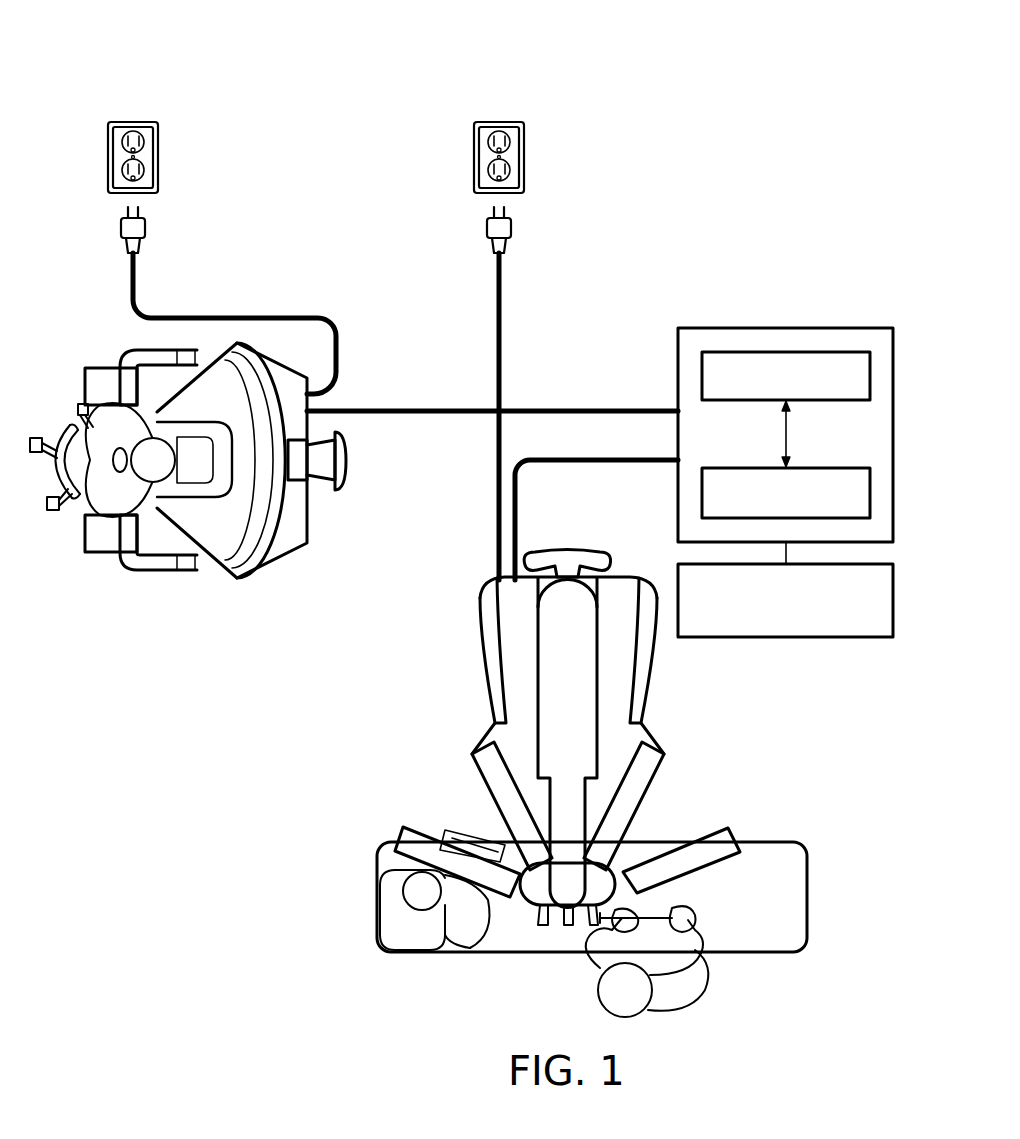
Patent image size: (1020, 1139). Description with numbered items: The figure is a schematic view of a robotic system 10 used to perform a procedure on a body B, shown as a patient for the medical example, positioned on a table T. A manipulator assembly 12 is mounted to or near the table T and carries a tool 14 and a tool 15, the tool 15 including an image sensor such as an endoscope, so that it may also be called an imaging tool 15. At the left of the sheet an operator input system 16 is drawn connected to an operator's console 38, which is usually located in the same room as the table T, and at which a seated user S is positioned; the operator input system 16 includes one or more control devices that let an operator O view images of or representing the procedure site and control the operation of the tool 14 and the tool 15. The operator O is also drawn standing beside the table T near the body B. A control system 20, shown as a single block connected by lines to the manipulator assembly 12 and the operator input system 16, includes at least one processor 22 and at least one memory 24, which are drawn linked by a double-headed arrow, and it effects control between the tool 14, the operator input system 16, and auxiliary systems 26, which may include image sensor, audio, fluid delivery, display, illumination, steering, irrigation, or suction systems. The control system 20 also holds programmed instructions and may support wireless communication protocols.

The robotic system 10 is at (310, 64).
The manipulator assembly 12 is at (567, 700).
The tool 14 is at (595, 868).
The imaging tool 15 is at (553, 925).
The operator input system 16 is at (285, 560).
The control system 20 is at (840, 318).
The processor 22 is at (748, 401).
The memory 24 is at (834, 468).
The auxiliary systems 26 is at (796, 637).
The operator's console 38 is at (218, 540).
The subject S is at (72, 425).
The body B is at (395, 931).
The table T is at (743, 960).
The operator O is at (666, 1022).